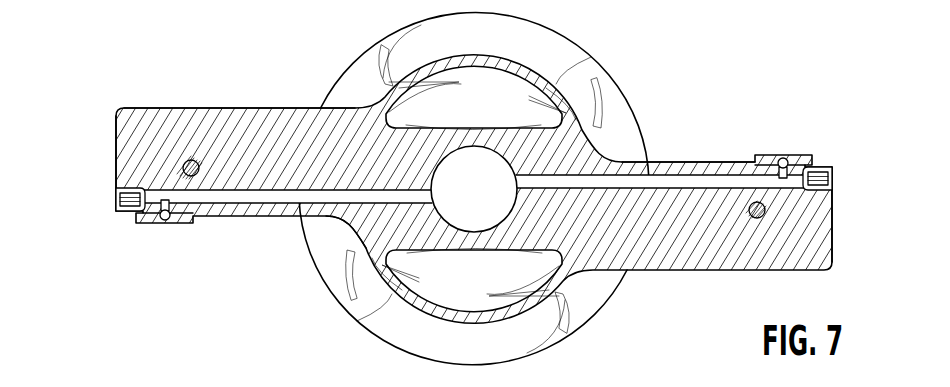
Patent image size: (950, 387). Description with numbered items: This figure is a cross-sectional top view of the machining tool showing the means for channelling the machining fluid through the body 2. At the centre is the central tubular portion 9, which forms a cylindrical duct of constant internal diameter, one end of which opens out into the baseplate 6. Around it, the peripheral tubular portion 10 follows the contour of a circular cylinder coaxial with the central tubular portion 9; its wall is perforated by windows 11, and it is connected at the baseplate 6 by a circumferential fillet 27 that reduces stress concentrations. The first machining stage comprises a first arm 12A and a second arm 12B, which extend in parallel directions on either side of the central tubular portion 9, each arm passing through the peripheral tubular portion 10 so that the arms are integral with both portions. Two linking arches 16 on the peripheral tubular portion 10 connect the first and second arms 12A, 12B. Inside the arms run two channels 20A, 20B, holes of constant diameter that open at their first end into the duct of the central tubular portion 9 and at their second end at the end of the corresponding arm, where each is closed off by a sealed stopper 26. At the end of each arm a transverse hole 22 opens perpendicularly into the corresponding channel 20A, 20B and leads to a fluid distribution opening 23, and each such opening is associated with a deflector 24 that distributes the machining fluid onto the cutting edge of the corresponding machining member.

The body 2 is at (319, 261).
The baseplate 6 is at (570, 60).
The central tubular portion 9 is at (445, 160).
The peripheral tubular portion 10 is at (600, 308).
The windows 11 is at (410, 52).
The first arm 12A is at (758, 262).
The second arm 12B is at (260, 115).
The linking arches 16 is at (468, 62).
The channel 20A is at (656, 178).
The channel 20B is at (250, 202).
The transverse hole 22 is at (163, 208).
The fluid distribution opening 23 is at (165, 220).
The deflector 24 is at (143, 222).
The stopper 26 is at (118, 200).
The circumferential fillet 27 is at (332, 258).